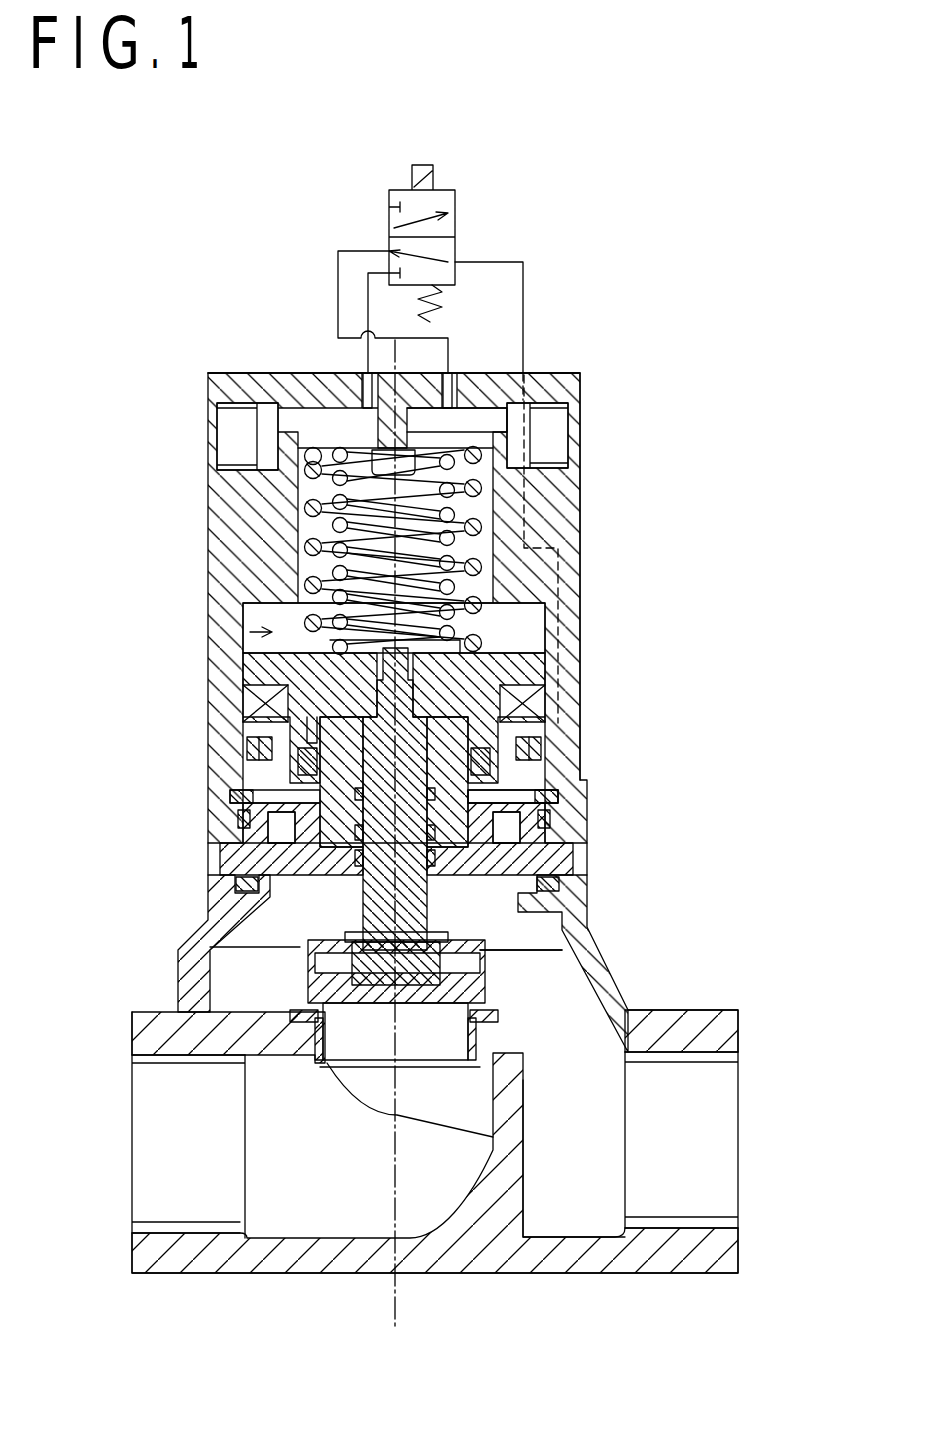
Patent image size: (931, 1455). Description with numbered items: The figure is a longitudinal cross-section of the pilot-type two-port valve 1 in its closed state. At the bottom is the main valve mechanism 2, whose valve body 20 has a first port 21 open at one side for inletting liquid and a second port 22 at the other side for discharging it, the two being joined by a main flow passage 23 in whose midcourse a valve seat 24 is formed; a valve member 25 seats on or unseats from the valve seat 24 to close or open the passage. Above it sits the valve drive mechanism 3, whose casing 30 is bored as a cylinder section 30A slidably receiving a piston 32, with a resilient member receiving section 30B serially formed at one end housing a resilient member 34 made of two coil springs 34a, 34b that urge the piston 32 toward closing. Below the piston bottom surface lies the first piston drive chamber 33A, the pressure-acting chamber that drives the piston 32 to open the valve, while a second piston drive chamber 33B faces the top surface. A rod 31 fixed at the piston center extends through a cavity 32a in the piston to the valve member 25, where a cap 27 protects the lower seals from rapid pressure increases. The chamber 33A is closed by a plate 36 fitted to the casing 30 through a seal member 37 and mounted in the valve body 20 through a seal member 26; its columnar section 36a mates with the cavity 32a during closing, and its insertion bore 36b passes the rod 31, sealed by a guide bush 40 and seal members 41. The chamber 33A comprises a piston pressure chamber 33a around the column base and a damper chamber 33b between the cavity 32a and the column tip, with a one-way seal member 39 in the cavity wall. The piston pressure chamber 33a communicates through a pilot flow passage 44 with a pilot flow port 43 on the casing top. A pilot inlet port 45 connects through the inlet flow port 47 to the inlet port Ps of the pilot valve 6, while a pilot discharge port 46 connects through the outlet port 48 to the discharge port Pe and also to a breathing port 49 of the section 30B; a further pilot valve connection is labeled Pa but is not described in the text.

The pilot-type two-port valve 1 is at (646, 361).
The main valve mechanism 2 is at (443, 1100).
The valve drive mechanism 3 is at (611, 565).
The pilot valve 6 is at (483, 186).
The discharge port Pe is at (389, 251).
The supply pressure port Pa is at (455, 262).
The inlet port Ps is at (389, 275).
The valve body 20 is at (622, 995).
The first port 21 is at (150, 1125).
The second port 22 is at (735, 1123).
The main flow passage 23 is at (600, 968).
The valve seat 24 is at (290, 1030).
The valve member 25 is at (300, 997).
The seal member 26 is at (567, 895).
The cap 27 is at (290, 945).
The casing 30 is at (212, 520).
The cylinder section 30A is at (560, 630).
The resilient member receiving section 30B is at (555, 518).
The rod 31 is at (245, 888).
The piston 32 is at (406, 716).
The cavity 32a is at (565, 690).
The first piston drive chamber 33A is at (240, 825).
The second piston drive chamber 33B is at (250, 632).
The piston pressure chamber 33a is at (565, 800).
The damper chamber 33b is at (565, 735).
The resilient member 34 is at (281, 551).
The coil spring 34a is at (330, 518).
The coil spring 34b is at (340, 583).
The plate 36 is at (397, 825).
The columnar section 36a is at (250, 735).
The insertion bore 36b is at (240, 795).
The seal member 37 is at (565, 822).
The one-way seal member 39 is at (565, 752).
The guide bush 40 is at (250, 750).
The seal members 41 is at (363, 740).
The pilot flow port 43 is at (524, 373).
The pilot flow passage 44 is at (570, 578).
The pilot inlet port 45 is at (222, 443).
The pilot discharge port 46 is at (555, 425).
The inlet flow port 47 is at (364, 373).
The outlet port 48 is at (450, 373).
The breathing port 49 is at (560, 455).